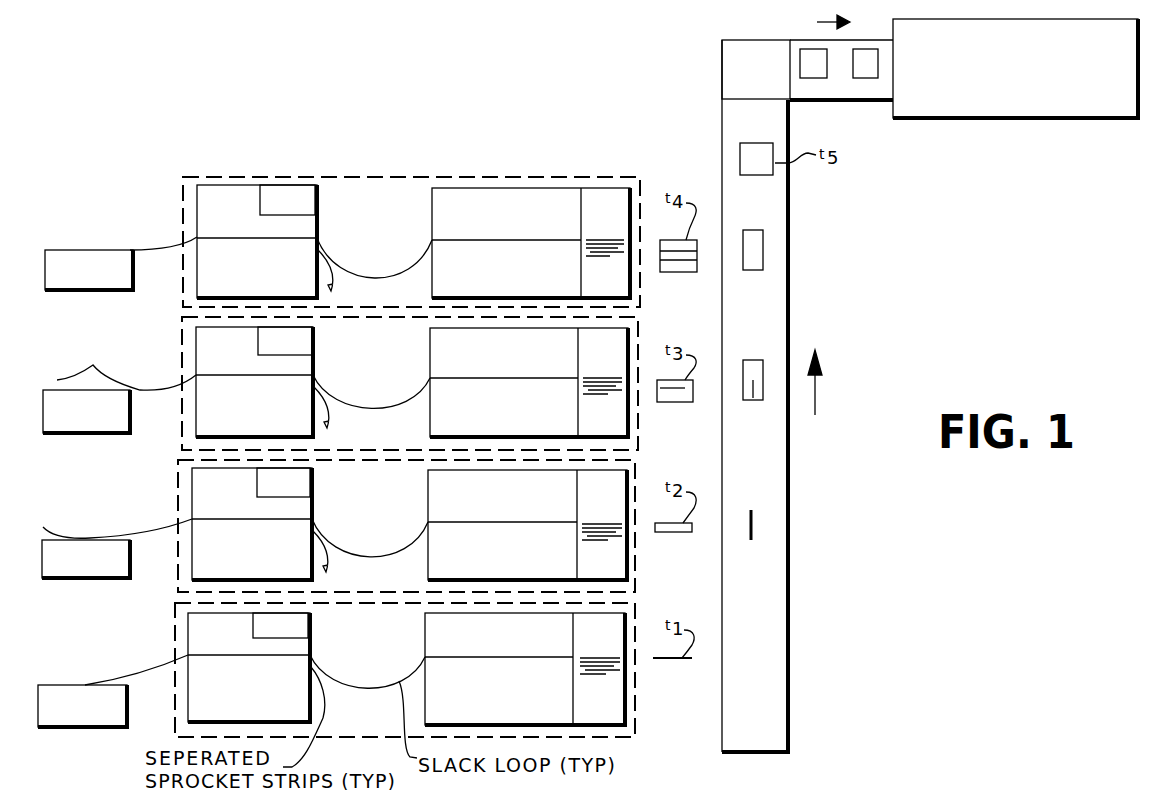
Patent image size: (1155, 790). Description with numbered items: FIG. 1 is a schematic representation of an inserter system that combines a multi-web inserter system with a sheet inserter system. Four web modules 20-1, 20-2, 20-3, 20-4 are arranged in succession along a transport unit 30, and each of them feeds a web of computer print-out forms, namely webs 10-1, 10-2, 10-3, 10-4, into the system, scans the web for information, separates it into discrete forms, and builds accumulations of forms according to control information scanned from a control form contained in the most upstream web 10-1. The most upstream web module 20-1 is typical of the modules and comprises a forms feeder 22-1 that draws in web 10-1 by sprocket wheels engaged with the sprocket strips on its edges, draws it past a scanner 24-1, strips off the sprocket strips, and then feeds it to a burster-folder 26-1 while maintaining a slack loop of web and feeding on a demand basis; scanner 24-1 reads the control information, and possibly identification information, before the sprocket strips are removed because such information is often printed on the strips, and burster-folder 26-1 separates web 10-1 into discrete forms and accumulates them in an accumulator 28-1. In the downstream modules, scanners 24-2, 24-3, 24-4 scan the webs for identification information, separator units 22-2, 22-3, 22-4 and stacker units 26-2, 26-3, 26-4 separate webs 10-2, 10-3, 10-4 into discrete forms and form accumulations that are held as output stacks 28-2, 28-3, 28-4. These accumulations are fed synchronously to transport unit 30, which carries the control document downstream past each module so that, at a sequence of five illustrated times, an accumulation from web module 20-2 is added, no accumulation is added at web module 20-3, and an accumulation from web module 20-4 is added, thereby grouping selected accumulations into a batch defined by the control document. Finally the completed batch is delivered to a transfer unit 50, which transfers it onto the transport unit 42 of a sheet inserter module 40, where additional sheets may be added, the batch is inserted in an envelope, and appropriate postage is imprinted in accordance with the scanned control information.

The web 10-1 is at (103, 720).
The web 10-2 is at (107, 570).
The web 10-3 is at (108, 425).
The web 10-4 is at (110, 283).
The web module 20-1 is at (385, 728).
The web module 20-2 is at (403, 583).
The web module 20-3 is at (403, 442).
The web module 20-4 is at (408, 300).
The forms feeder 22-1 is at (271, 700).
The separator unit 22-2 is at (273, 567).
The separator unit 22-3 is at (275, 422).
The separator unit 22-4 is at (277, 281).
The scanner 24-1 is at (280, 625).
The scanner 24-2 is at (283, 482).
The scanner 24-3 is at (285, 341).
The scanner 24-4 is at (287, 200).
The burster-folder 26-1 is at (517, 702).
The stacker unit 26-2 is at (520, 568).
The stacker unit 26-3 is at (521, 425).
The stacker unit 26-4 is at (523, 282).
The accumulator 28-1 is at (620, 703).
The output stack 28-2 is at (622, 570).
The output stack 28-3 is at (623, 427).
The output stack 28-4 is at (625, 285).
The transport unit 30 is at (792, 644).
The sheet inserter module 40 is at (1032, 82).
The transport unit 42 is at (851, 99).
The transfer unit 50 is at (774, 77).